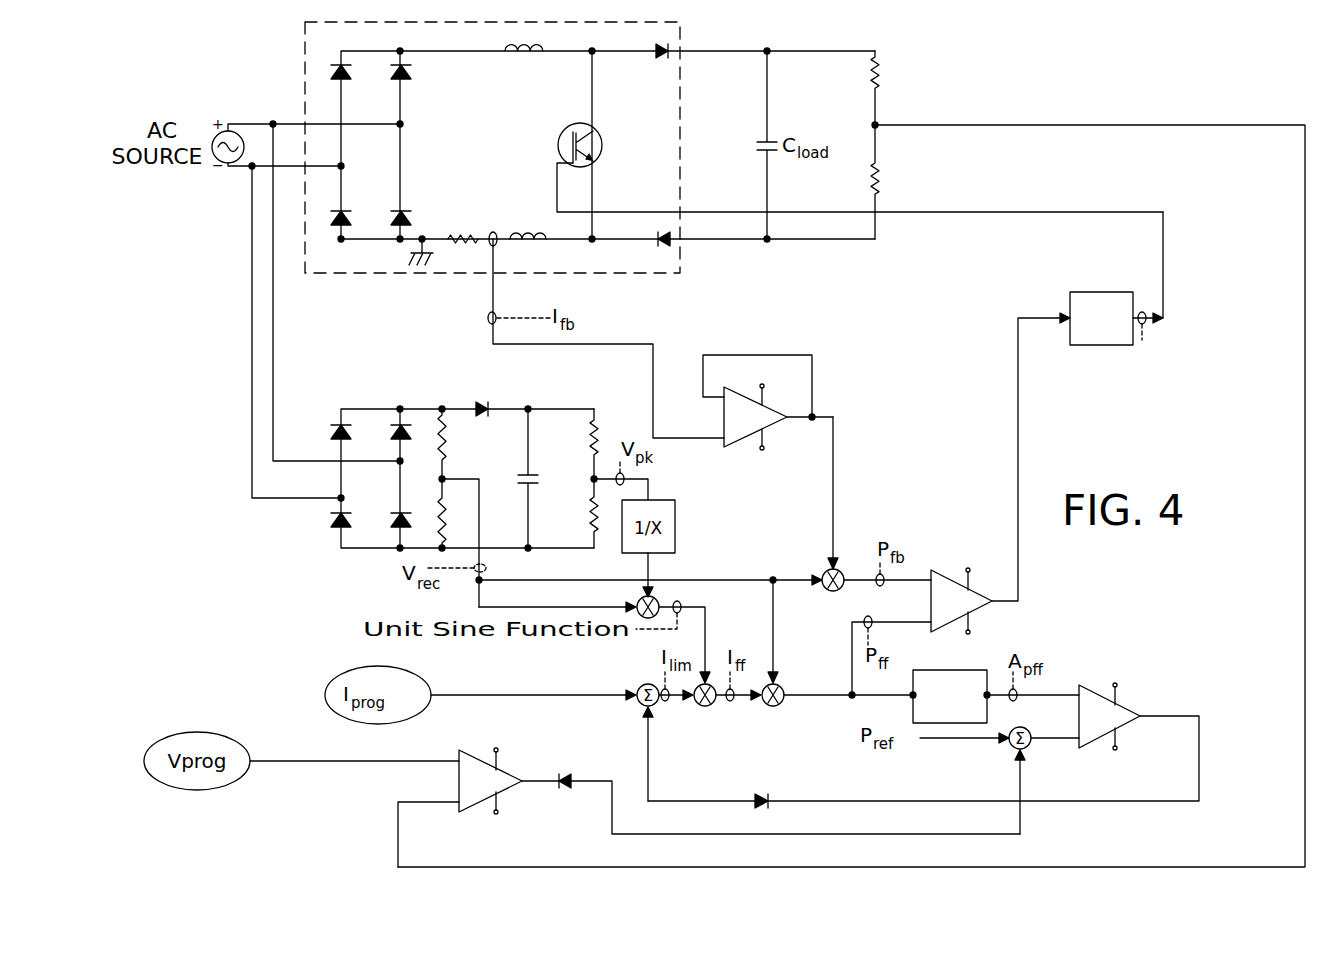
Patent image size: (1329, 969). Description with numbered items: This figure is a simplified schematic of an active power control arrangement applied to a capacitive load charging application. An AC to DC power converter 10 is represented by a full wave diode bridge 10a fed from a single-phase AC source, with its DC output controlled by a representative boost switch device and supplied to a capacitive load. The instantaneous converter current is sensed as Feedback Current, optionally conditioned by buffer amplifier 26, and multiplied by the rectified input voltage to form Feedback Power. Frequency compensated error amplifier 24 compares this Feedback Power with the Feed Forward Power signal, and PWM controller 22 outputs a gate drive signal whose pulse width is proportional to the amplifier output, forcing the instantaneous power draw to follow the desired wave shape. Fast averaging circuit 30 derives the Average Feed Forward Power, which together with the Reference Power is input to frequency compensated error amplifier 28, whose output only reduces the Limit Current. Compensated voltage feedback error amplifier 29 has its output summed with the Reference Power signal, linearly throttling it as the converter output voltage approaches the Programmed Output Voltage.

The AC to DC power converter 10 is at (293, 71).
The full wave diode bridge 10a is at (422, 134).
The PWM controller 22 is at (1078, 298).
The frequency compensated error amplifier 24 is at (955, 598).
The buffer amplifier 26 is at (748, 424).
The frequency compensated error amplifier 28 is at (1097, 730).
The compensated voltage feedback error amplifier 29 is at (478, 790).
The fast averaging circuit 30 is at (940, 672).